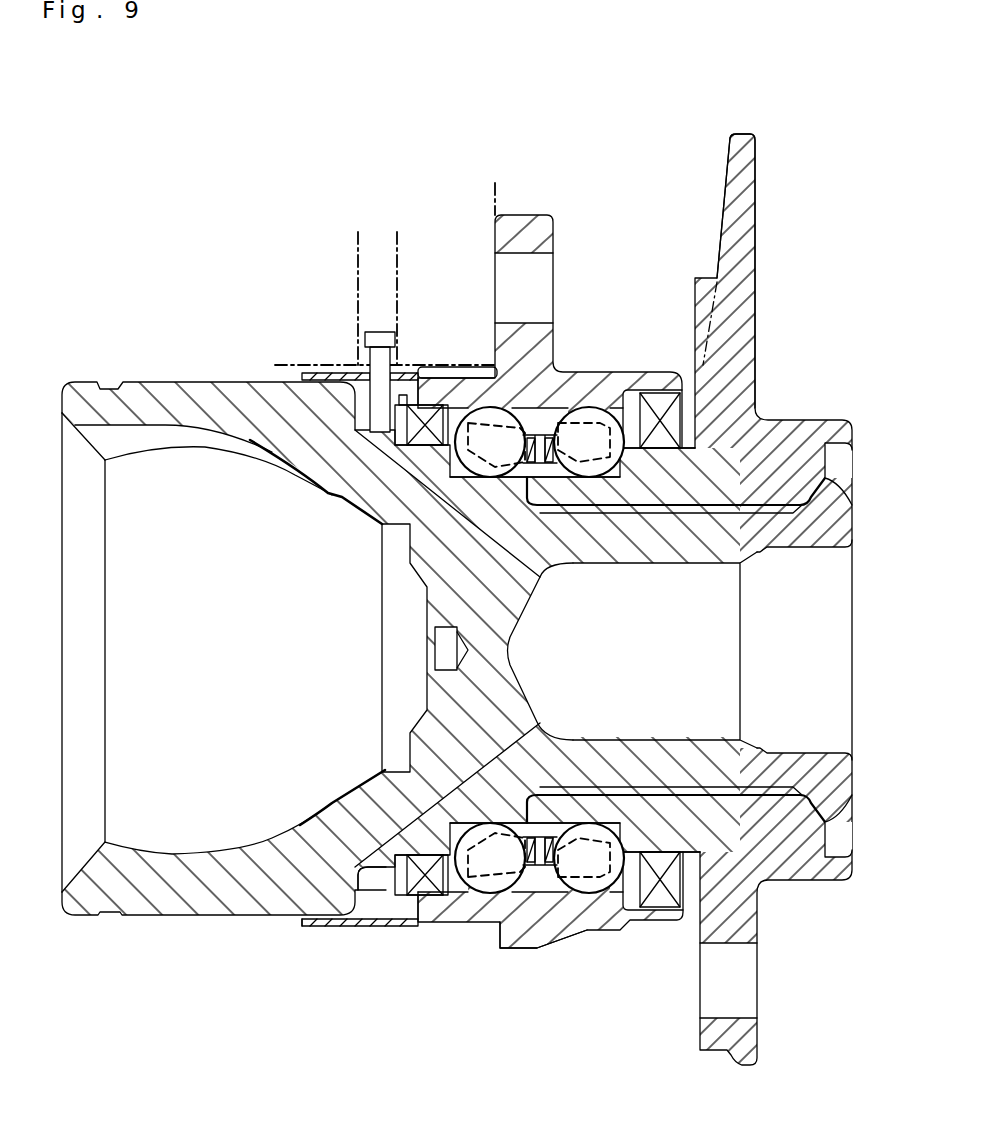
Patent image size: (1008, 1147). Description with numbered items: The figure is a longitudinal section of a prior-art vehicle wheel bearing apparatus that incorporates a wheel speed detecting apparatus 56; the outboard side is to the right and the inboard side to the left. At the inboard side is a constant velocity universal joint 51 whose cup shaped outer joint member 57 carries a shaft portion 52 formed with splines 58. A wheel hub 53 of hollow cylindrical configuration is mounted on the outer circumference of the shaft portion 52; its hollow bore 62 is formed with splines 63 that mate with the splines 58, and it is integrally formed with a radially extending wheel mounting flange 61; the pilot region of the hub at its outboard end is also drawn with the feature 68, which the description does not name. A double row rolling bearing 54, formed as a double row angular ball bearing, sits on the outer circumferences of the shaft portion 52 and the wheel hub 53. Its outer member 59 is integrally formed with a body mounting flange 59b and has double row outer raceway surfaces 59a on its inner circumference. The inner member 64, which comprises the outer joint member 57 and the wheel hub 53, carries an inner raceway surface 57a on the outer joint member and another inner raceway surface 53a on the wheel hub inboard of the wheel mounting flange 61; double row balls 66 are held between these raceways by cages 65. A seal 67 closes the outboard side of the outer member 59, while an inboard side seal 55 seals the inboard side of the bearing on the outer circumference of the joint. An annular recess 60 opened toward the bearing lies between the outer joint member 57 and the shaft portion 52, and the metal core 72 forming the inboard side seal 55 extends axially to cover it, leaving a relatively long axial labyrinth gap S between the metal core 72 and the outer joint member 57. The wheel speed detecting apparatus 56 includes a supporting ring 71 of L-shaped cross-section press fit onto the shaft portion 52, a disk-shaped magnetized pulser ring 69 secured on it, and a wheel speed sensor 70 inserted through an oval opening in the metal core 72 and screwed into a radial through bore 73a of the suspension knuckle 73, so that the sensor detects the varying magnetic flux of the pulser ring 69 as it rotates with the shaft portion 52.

The constant velocity universal joint 51 is at (77, 381).
The shaft portion 52 is at (612, 553).
The wheel hub 53 is at (806, 391).
The inner raceway surface 53a is at (660, 507).
The double row rolling bearing 54 is at (598, 301).
The inboard side seal 55 is at (428, 412).
The wheel speed detecting apparatus 56 is at (354, 368).
The outer joint member 57 is at (194, 397).
The inner raceway surface 57a is at (382, 530).
The splines 58 is at (710, 495).
The outer member 59 is at (598, 922).
The outer raceway surfaces 59a is at (580, 878).
The body mounting flange 59b is at (520, 238).
The annular recess 60 is at (360, 867).
The wheel mounting flange 61 is at (735, 282).
The hollow bore 62 is at (786, 508).
The splines 63 is at (706, 792).
The inner member 64 is at (531, 527).
The cages 65 is at (540, 760).
The balls 66 is at (570, 884).
The seal 67 is at (662, 905).
The groove of pilot portion 68 is at (839, 803).
The pulser ring 69 is at (384, 346).
The wheel speed sensor 70 is at (380, 412).
The supporting ring 71 is at (402, 395).
The metal core 72 is at (367, 928).
The knuckle 73 is at (282, 367).
The through bore 73a is at (363, 283).
The labyrinth gap S is at (287, 922).